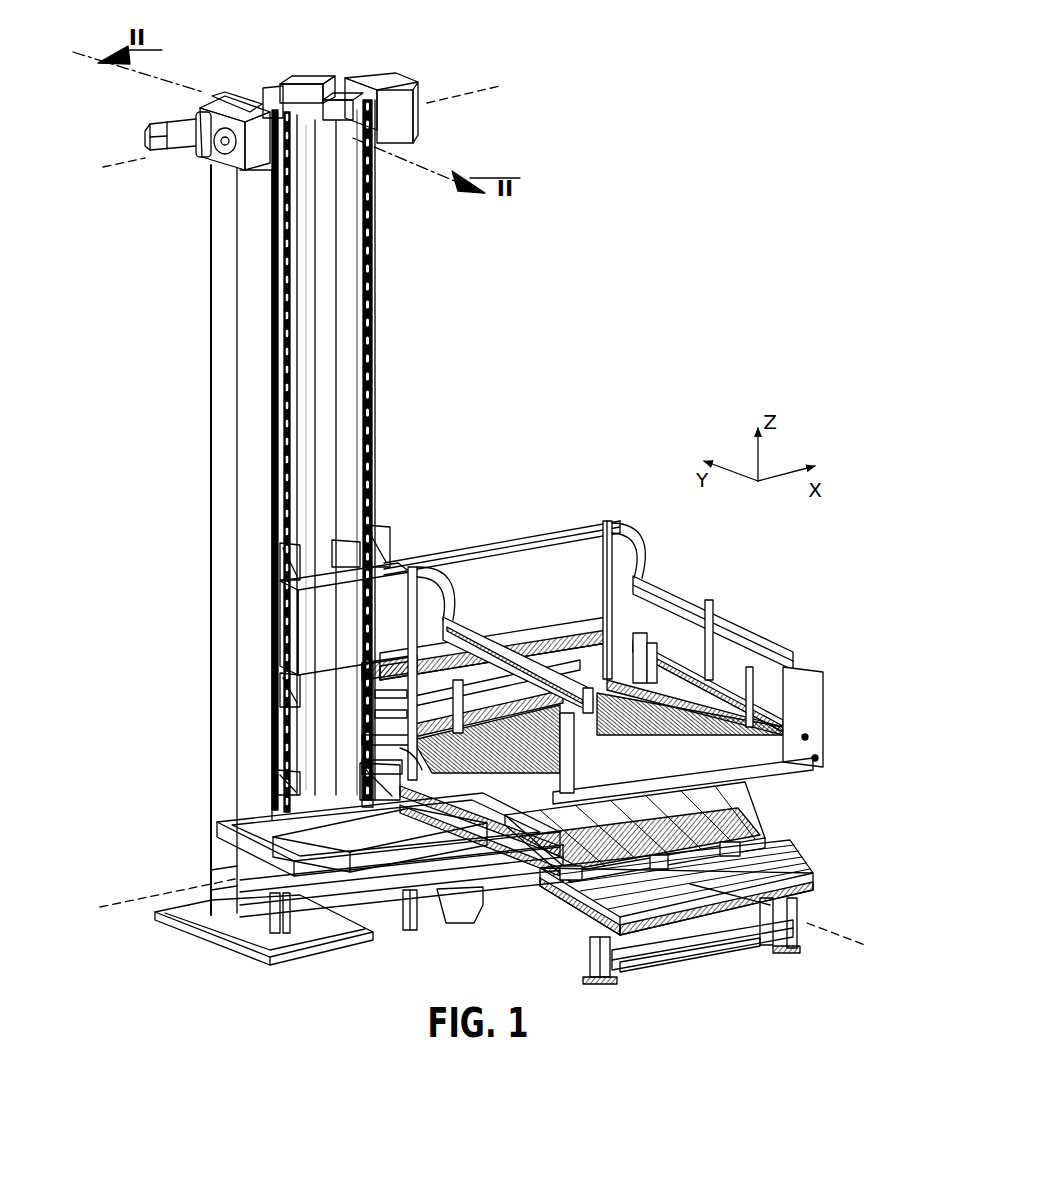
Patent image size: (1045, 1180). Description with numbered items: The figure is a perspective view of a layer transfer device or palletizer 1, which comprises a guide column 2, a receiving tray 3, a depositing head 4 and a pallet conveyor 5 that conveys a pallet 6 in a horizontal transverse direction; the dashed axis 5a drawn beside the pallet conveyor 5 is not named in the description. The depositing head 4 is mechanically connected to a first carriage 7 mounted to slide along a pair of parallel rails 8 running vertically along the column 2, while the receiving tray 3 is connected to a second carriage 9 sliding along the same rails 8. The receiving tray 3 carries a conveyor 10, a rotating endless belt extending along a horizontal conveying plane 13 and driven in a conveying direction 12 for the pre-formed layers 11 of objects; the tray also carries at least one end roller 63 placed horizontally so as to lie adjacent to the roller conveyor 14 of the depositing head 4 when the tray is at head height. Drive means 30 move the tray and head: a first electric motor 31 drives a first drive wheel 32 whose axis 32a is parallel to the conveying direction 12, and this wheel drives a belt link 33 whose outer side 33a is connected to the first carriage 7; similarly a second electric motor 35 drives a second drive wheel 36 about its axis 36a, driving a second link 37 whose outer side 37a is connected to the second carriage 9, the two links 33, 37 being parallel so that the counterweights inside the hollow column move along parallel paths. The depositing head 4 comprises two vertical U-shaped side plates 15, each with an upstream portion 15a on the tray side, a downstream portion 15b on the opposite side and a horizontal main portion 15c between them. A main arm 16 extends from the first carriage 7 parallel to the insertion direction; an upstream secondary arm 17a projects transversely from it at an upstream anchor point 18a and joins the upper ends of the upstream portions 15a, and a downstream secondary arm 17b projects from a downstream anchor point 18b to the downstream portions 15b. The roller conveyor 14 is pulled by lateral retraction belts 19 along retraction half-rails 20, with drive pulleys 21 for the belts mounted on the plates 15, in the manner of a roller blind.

The palletizer 1 is at (553, 363).
The guide column 2 is at (209, 254).
The receiving tray 3 is at (343, 893).
The depositing head 4 is at (632, 644).
The pallet conveyor 5 is at (785, 850).
The conveyor axis 5a is at (843, 935).
The pallet 6 is at (702, 818).
The first carriage 7 is at (320, 633).
The rails 8 is at (281, 487).
The second carriage 9 is at (237, 832).
The conveyor 10 is at (410, 872).
The layers 11 is at (453, 897).
The conveying direction 12 is at (133, 900).
The conveying plane 13 is at (372, 883).
The roller conveyor 14 is at (653, 720).
The lateral structures 15 is at (399, 697).
The upstream portion 15a is at (558, 789).
The downstream portion 15b is at (807, 700).
The main portion 15c is at (760, 765).
The main arm 16 is at (613, 528).
The upstream secondary arm 17a is at (480, 617).
The downstream secondary arm 17b is at (677, 590).
The upstream anchor point 18a is at (423, 577).
The downstream anchor point 18b is at (600, 530).
The retraction belts 19 is at (410, 754).
The retraction half-rails 20 is at (400, 717).
The drive pulleys 21 is at (373, 773).
The drive means 30 is at (132, 152).
The first electric motor 31 is at (400, 83).
The first drive wheel 32 is at (317, 96).
The axis of rotation 32a is at (473, 92).
The link 33 is at (350, 220).
The outer side 33a is at (347, 242).
The second electric motor 35 is at (173, 125).
The second drive wheel 36 is at (280, 113).
The axis of rotation 36a is at (137, 167).
The second link 37 is at (305, 300).
The outer side 37a is at (307, 343).
The end roller 63 is at (450, 822).